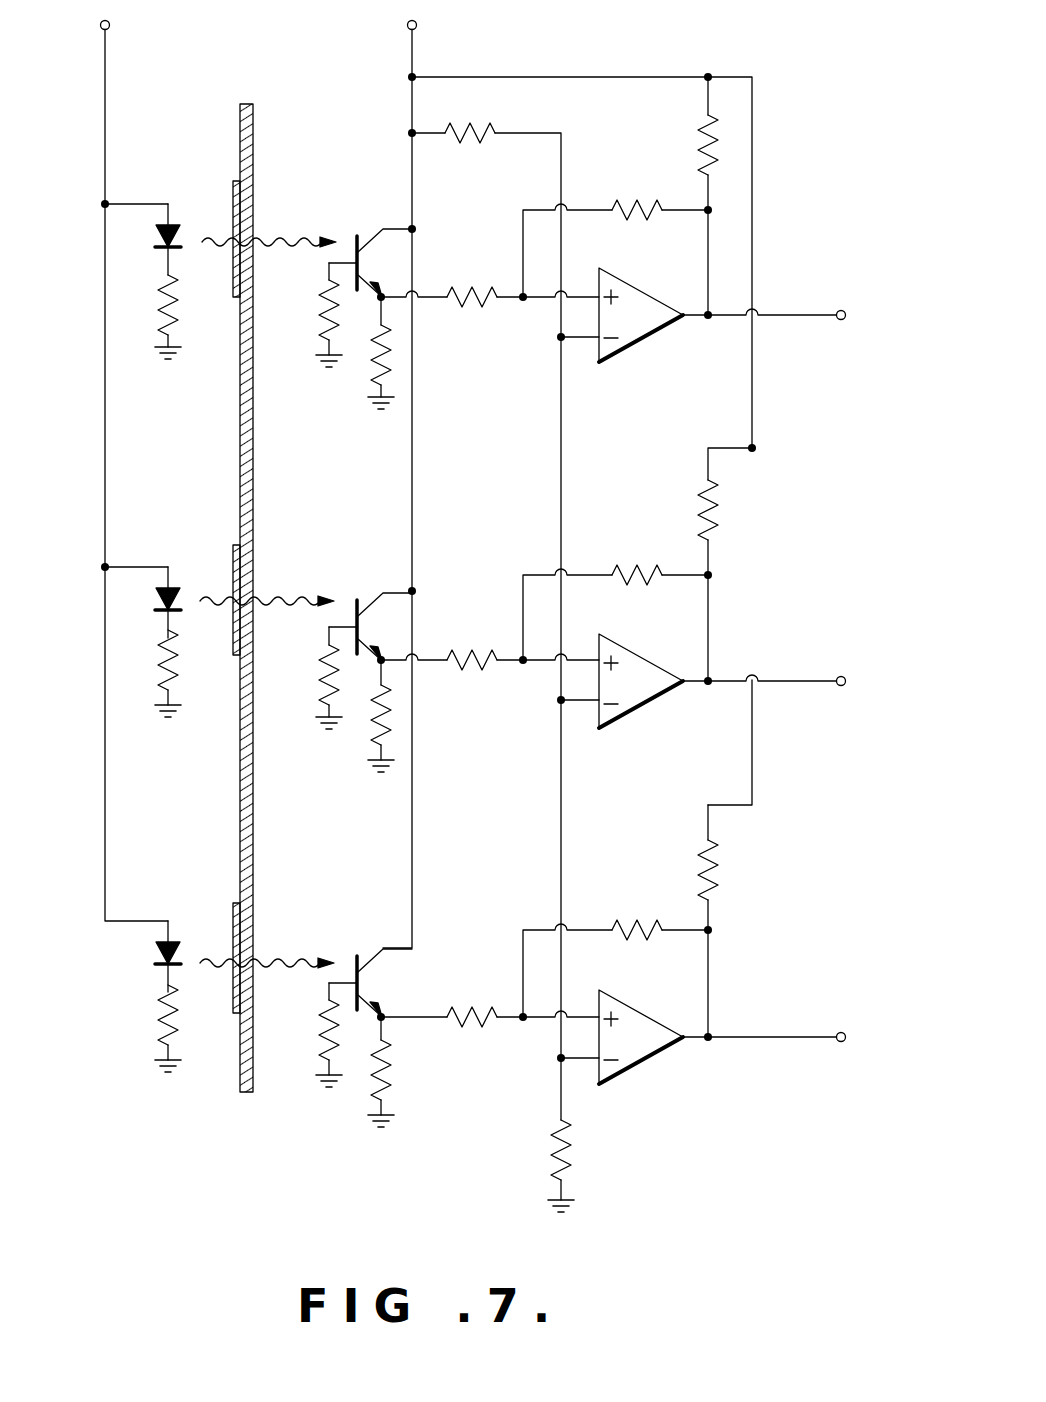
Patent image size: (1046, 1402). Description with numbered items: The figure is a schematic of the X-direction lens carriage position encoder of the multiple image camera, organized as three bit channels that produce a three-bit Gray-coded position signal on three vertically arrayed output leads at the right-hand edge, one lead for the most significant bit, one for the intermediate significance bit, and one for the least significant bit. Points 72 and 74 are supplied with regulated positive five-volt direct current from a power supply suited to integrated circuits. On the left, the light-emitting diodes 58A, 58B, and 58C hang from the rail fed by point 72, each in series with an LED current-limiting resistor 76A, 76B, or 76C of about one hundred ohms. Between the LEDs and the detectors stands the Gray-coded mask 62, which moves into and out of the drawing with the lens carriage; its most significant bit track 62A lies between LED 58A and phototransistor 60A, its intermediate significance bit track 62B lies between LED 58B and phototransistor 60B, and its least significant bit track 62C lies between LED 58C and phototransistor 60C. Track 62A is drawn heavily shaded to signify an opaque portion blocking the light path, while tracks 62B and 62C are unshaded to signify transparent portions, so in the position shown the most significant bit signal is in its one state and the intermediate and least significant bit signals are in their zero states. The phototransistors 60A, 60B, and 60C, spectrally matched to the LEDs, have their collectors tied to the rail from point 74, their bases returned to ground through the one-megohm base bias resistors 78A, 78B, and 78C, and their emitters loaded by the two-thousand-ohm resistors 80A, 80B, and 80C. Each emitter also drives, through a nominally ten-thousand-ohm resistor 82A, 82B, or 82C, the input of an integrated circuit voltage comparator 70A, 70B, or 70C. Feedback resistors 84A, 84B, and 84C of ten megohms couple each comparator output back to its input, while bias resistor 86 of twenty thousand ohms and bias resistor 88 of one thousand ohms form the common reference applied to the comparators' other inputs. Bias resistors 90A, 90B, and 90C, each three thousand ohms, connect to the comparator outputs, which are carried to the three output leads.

The point 72 is at (100, 31).
The point 74 is at (418, 30).
The light-emitting diode 58A is at (157, 238).
The light-emitting diode 58B is at (157, 603).
The light-emitting diode 58C is at (157, 947).
The LED current-limiting resistor 76A is at (158, 303).
The LED current-limiting resistor 76B is at (158, 656).
The LED current-limiting resistor 76C is at (158, 1010).
The Gray-coded mask 62 is at (256, 122).
The most significant bit track 62A is at (236, 181).
The intermediate significance bit track 62B is at (236, 545).
The least significant bit track 62C is at (237, 903).
The phototransistor 60A is at (368, 232).
The phototransistor 60B is at (367, 593).
The phototransistor 60C is at (370, 951).
The phototransistor base bias resistor 78A is at (322, 297).
The phototransistor base bias resistor 78B is at (321, 668).
The phototransistor base bias resistor 78C is at (321, 1035).
The resistor 80A is at (371, 377).
The resistor 80B is at (371, 739).
The resistor 80C is at (371, 1101).
The emitter resistor 82A is at (487, 306).
The emitter resistor 82B is at (487, 666).
The emitter resistor 82C is at (487, 1026).
The feedback resistor 84A is at (650, 205).
The feedback resistor 84B is at (648, 569).
The feedback resistor 84C is at (645, 921).
The bias resistor 86 is at (486, 143).
The bias resistor 88 is at (569, 1152).
The bias resistor 90A is at (704, 136).
The bias resistor 90B is at (704, 495).
The bias resistor 90C is at (704, 856).
The integrated circuit voltage comparator 70A is at (640, 302).
The integrated circuit voltage comparator 70B is at (640, 666).
The integrated circuit voltage comparator 70C is at (641, 1021).